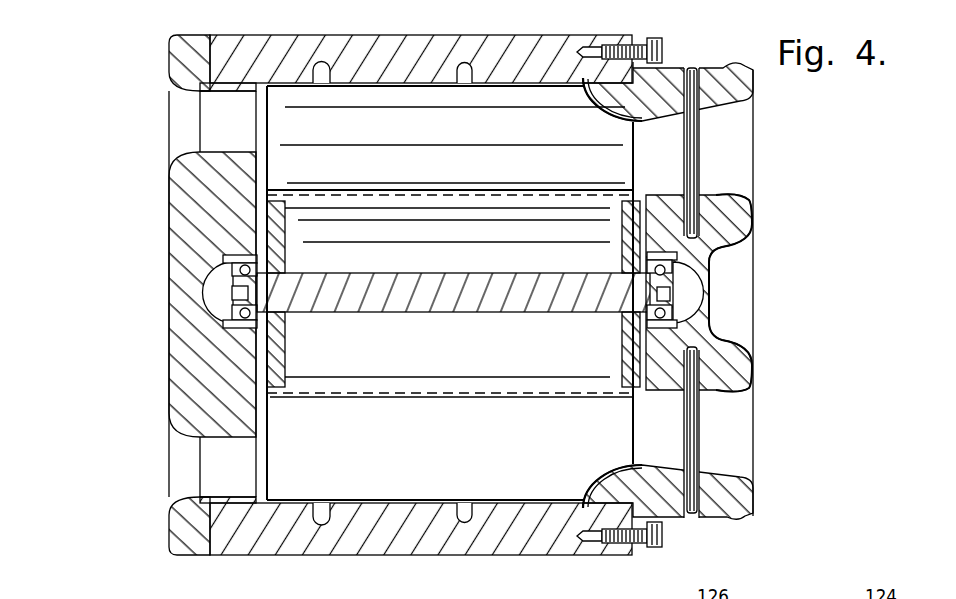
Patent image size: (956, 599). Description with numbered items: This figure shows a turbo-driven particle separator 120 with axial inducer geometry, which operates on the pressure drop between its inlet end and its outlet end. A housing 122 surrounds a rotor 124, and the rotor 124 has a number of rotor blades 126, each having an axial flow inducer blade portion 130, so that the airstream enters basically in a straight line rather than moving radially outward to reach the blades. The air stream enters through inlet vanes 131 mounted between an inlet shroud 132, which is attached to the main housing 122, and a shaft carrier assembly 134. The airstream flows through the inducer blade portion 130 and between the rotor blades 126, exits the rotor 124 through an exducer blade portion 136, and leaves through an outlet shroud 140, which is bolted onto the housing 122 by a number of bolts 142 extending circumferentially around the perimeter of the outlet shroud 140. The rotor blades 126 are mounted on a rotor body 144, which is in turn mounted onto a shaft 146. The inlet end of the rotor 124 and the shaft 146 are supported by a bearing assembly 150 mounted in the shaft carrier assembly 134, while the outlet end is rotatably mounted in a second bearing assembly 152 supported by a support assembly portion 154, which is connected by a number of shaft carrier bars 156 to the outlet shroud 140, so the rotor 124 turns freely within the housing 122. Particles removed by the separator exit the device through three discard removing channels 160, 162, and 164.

The particle separator 120 is at (110, 51).
The housing 122 is at (429, 545).
The rotor 124 is at (266, 118).
The rotor blades 126 is at (417, 100).
The axial flow inducer blade portion 130 is at (272, 98).
The inlet vanes 131 is at (210, 136).
The inlet shroud 132 is at (178, 530).
The shaft carrier assembly 134 is at (182, 193).
The exducer blade portion 136 is at (632, 178).
The outlet shroud 140 is at (744, 498).
The bolts 142 is at (656, 41).
The rotor body 144 is at (362, 392).
The shaft 146 is at (703, 307).
The bearing assembly 150 is at (240, 314).
The second bearing assembly 152 is at (703, 268).
The support assembly portion 154 is at (744, 364).
The shaft carrier bars 156 is at (700, 450).
The discard removing channel 160 is at (326, 68).
The discard removing channel 162 is at (463, 70).
The discard removing channel 164 is at (584, 76).